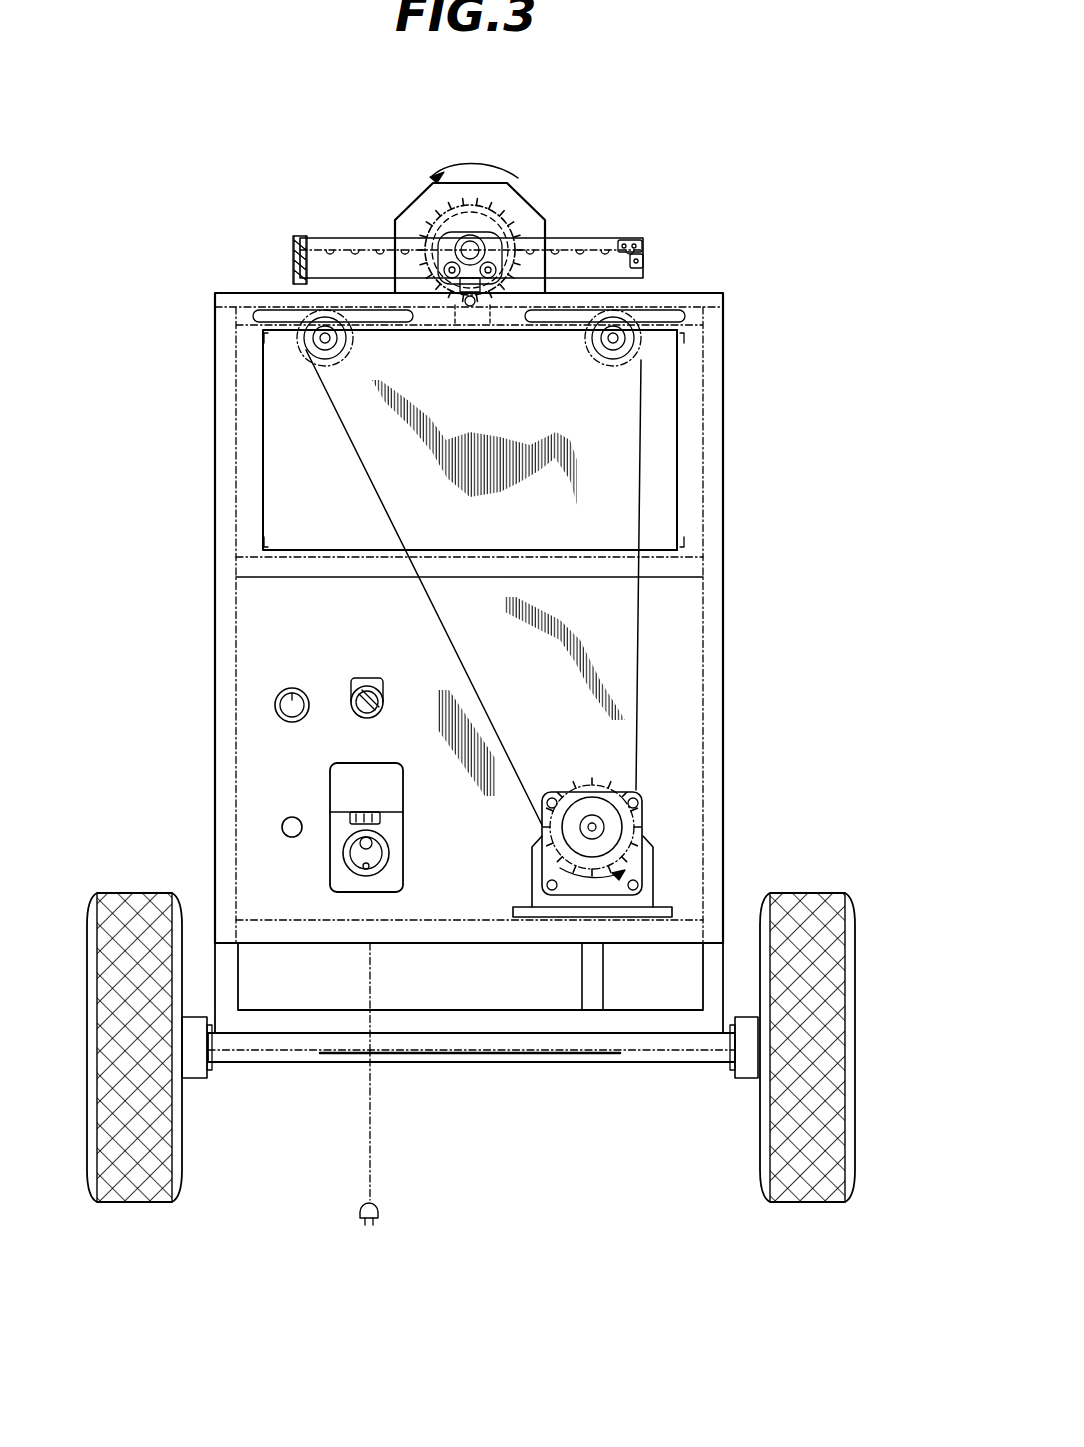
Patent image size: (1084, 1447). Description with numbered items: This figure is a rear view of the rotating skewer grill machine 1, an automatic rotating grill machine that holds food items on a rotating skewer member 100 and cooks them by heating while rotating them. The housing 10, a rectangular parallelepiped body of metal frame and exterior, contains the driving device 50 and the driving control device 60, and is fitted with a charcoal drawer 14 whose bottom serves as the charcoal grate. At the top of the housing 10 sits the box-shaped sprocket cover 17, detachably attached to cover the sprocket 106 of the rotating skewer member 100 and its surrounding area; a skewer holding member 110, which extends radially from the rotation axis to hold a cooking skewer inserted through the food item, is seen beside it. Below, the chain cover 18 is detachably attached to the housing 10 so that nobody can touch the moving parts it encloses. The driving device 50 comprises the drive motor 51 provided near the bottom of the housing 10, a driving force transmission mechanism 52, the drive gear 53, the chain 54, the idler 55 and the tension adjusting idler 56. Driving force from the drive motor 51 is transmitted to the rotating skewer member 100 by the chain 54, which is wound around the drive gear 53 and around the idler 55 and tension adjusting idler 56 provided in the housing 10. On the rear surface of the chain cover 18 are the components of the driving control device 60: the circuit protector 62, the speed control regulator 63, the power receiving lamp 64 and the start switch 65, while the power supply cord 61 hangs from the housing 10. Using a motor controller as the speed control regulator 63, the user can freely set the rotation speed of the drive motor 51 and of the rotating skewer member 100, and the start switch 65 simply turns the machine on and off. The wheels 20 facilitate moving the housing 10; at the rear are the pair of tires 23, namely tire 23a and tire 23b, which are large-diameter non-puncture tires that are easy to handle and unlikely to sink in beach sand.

The rotating skewer grill machine 1 is at (185, 190).
The housing 10 is at (215, 463).
The charcoal drawer 14 is at (680, 447).
The sprocket cover 17 is at (430, 213).
The chain cover 18 is at (722, 370).
The wheels 20 is at (503, 1133).
The tires 23 is at (471, 1115).
The tire 23a is at (137, 1178).
The tire 23b is at (805, 1172).
The driving device 50 is at (574, 613).
The drive motor 51 is at (632, 878).
The driving force transmission mechanism 52 is at (613, 754).
The drive gear 53 is at (640, 822).
The chain 54 is at (628, 670).
The idler 55 is at (625, 360).
The tension adjusting idler 56 is at (355, 347).
The driving control device 60 is at (211, 773).
The power supply cord 61 is at (390, 1182).
The circuit protector 62 is at (292, 838).
The speed control regulator 63 is at (414, 843).
The power receiving lamp 64 is at (292, 688).
The start switch 65 is at (368, 680).
The rotating skewer member 100 is at (564, 223).
The sprocket 106 is at (525, 215).
The skewer holding member 110 is at (652, 238).